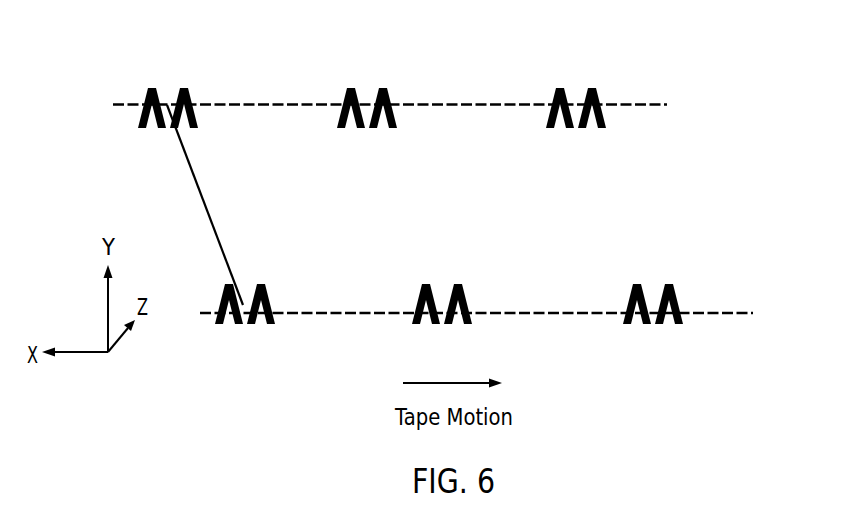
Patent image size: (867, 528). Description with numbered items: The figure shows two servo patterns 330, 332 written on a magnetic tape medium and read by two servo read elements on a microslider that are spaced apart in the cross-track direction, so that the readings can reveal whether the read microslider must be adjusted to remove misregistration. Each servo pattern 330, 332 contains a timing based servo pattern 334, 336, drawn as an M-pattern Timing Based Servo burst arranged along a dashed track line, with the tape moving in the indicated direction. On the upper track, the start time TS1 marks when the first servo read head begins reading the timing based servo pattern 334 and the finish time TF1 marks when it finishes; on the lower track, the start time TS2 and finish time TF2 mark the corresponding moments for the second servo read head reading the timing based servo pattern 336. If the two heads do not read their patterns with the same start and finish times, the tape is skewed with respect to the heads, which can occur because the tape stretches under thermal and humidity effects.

The servo pattern 330 is at (400, 68).
The servo pattern 332 is at (480, 294).
The timing based servo pattern 334 is at (167, 68).
The timing based servo pattern 336 is at (244, 294).
The finish time TF1 is at (147, 104).
The start time TS1 is at (197, 104).
The finish time TF2 is at (218, 315).
The start time TS2 is at (268, 315).